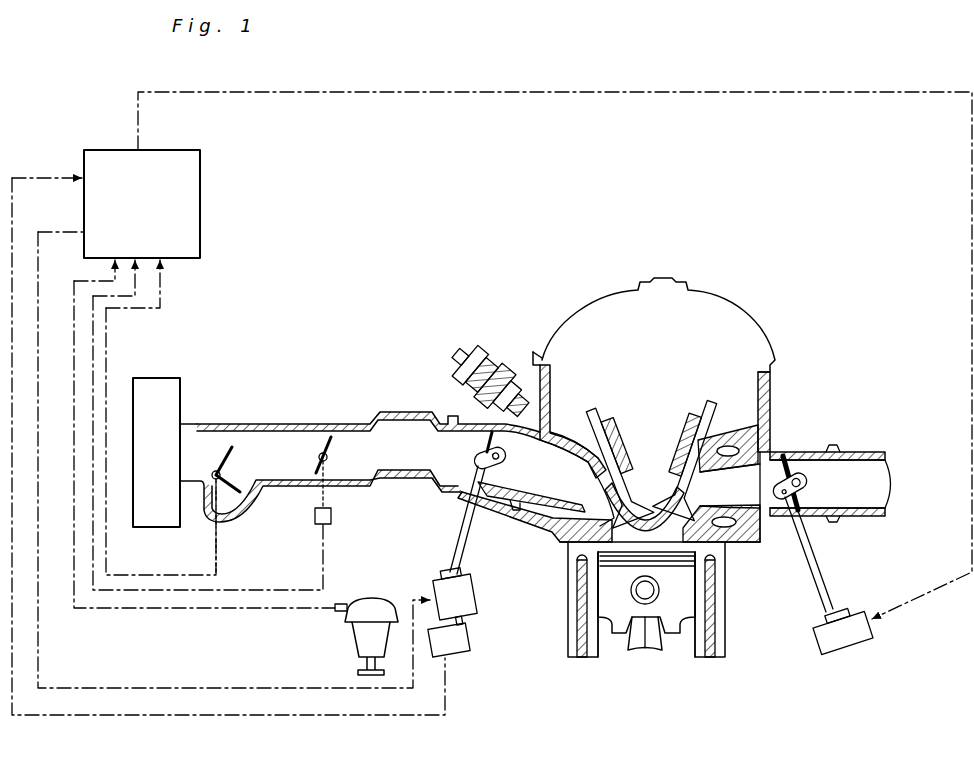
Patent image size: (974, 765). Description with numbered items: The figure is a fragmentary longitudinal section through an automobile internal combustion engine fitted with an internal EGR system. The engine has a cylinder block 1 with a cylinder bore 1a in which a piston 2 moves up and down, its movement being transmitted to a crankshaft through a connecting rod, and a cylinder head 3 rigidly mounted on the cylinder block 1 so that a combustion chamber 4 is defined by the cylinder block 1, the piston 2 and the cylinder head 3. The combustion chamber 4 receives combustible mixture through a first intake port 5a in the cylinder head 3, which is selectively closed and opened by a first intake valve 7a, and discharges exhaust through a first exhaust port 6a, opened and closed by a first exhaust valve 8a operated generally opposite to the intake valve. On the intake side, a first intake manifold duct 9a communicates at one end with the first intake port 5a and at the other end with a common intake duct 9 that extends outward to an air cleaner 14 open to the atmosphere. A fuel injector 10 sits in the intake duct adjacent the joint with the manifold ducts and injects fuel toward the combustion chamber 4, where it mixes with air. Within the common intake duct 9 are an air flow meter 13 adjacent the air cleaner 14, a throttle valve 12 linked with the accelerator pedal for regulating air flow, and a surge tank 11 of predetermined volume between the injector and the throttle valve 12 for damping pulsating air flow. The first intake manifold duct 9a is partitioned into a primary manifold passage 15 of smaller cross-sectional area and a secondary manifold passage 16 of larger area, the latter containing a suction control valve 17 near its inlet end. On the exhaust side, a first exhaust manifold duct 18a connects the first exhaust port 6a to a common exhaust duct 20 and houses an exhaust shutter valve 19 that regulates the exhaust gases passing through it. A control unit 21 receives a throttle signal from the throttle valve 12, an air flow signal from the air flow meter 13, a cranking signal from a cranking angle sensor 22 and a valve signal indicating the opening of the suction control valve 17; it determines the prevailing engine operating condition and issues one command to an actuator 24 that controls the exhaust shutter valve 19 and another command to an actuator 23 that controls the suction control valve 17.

The cylinder block 1 is at (720, 640).
The cylinder bore 1a is at (688, 655).
The piston 2 is at (668, 640).
The cylinder head 3 is at (745, 540).
The combustion chamber 4 is at (680, 565).
The first intake port 5a is at (565, 545).
The first exhaust port 6a is at (722, 480).
The first intake valve 7a is at (648, 488).
The first exhaust valve 8a is at (662, 490).
The common intake duct 9 is at (460, 418).
The first intake manifold duct 9a is at (582, 485).
The fuel injector 10 is at (482, 362).
The surge tank 11 is at (402, 418).
The throttle valve 12 is at (322, 455).
The air flow meter 13 is at (218, 470).
The air cleaner 14 is at (158, 385).
The primary manifold passage 15 is at (515, 510).
The secondary manifold passage 16 is at (544, 470).
The suction control valve 17 is at (470, 492).
The first exhaust manifold duct 18a is at (812, 470).
The exhaust shutter valve 19 is at (795, 508).
The common exhaust duct 20 is at (868, 452).
The control unit 21 is at (160, 158).
The cranking angle sensor 22 is at (370, 606).
The actuator 23 is at (462, 612).
The actuator 24 is at (852, 624).